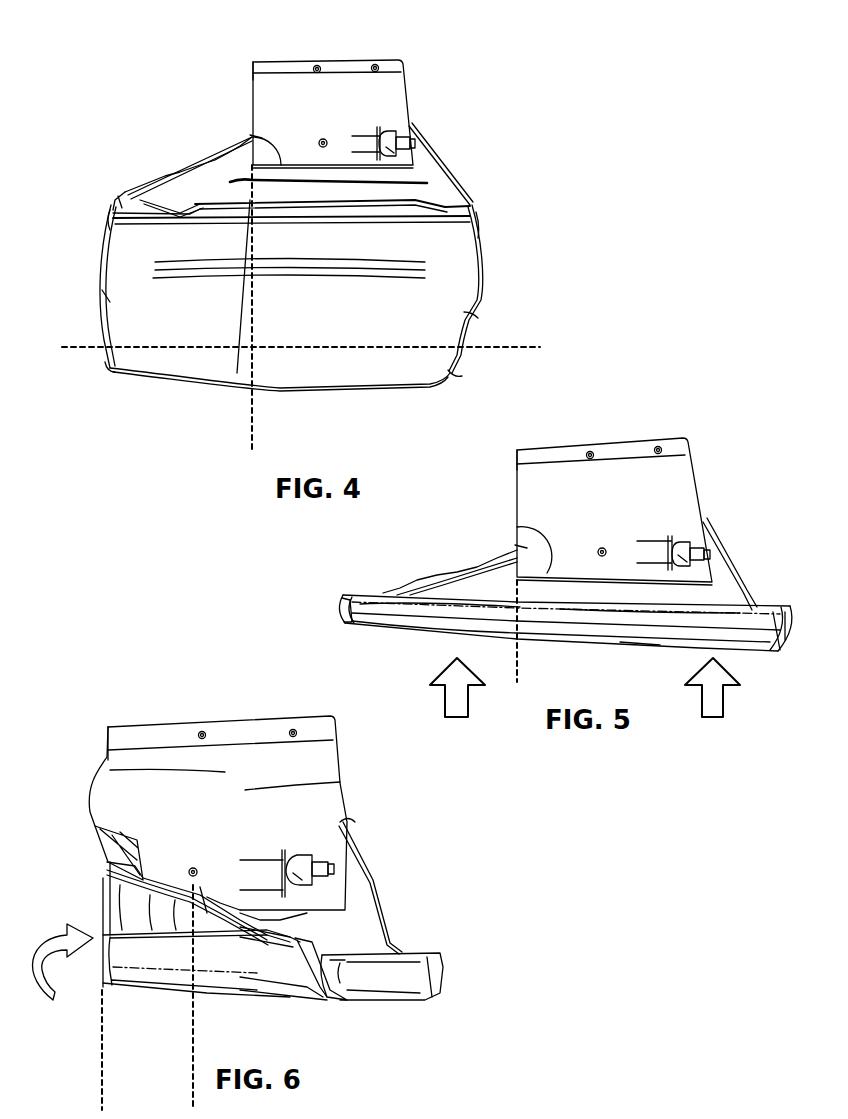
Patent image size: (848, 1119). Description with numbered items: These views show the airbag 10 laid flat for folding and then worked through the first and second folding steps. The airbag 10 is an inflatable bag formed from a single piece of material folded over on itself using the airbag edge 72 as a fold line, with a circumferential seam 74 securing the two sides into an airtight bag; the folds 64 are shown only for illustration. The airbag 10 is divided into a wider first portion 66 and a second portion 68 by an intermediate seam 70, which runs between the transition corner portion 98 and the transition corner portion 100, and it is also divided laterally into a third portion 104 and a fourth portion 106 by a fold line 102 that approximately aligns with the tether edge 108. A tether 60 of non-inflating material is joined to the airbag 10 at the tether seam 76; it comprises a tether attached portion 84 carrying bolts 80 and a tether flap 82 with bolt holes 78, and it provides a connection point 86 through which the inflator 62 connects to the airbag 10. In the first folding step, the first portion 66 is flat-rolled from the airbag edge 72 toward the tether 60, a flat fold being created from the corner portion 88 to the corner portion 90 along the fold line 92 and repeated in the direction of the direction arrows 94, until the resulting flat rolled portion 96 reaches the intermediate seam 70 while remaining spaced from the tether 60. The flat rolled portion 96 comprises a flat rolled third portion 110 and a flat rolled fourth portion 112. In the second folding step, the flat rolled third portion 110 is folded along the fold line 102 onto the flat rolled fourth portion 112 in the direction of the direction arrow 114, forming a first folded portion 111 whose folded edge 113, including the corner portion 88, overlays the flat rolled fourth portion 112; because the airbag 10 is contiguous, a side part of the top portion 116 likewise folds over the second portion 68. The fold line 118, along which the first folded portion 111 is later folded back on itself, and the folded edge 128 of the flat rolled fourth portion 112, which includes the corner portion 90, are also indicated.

In FIG. 4, the airbag 10 is at (226, 153).
In FIG. 5, the airbag 10 is at (478, 562).
In FIG. 6, the airbag 10 is at (388, 882).
In FIG. 4, the tether 60 is at (410, 72).
In FIG. 5, the tether 60 is at (697, 458).
In FIG. 6, the tether 60 is at (340, 750).
In FIG. 4, the inflator 62 is at (415, 150).
In FIG. 5, the inflator 62 is at (712, 557).
In FIG. 6, the inflator 62 is at (340, 870).
In FIG. 4, the folds 64 is at (150, 186).
In FIG. 4, the first portion 66 is at (330, 378).
In FIG. 4, the second portion 68 is at (195, 190).
In FIG. 4, the intermediate seam 70 is at (115, 214).
In FIG. 4, the airbag edge 72 is at (392, 388).
In FIG. 4, the circumferential seam 74 is at (104, 270).
In FIG. 4, the tether seam 76 is at (260, 133).
In FIG. 5, the tether seam 76 is at (530, 533).
In FIG. 6, the tether seam 76 is at (307, 913).
In FIG. 4, the bolt holes 78 is at (319, 66).
In FIG. 5, the bolt holes 78 is at (592, 452).
In FIG. 6, the bolt holes 78 is at (204, 731).
In FIG. 4, the bolts 80 is at (324, 139).
In FIG. 5, the bolts 80 is at (603, 548).
In FIG. 6, the bolts 80 is at (194, 868).
In FIG. 4, the tether flap 82 is at (400, 100).
In FIG. 5, the tether flap 82 is at (690, 485).
In FIG. 6, the tether flap 82 is at (330, 775).
In FIG. 4, the tether attached portion 84 is at (250, 137).
In FIG. 5, the tether attached portion 84 is at (516, 536).
In FIG. 6, the tether attached portion 84 is at (97, 826).
In FIG. 4, the connection point 86 is at (338, 193).
In FIG. 4, the corner portion 88 is at (110, 368).
In FIG. 4, the corner portion 90 is at (462, 375).
In FIG. 4, the fold line 92 is at (75, 346).
In FIG. 5, the direction arrows 94 is at (455, 712).
In FIG. 5, the flat rolled portion 96 is at (767, 620).
In FIG. 4, the transition corner portion 98 is at (112, 203).
In FIG. 4, the transition corner portion 100 is at (482, 215).
In FIG. 4, the fold line 102 is at (250, 436).
In FIG. 5, the fold line 102 is at (520, 660).
In FIG. 6, the fold line 102 is at (100, 1095).
In FIG. 4, the third portion 104 is at (108, 300).
In FIG. 4, the fourth portion 106 is at (467, 312).
In FIG. 4, the tether edge 108 is at (252, 78).
In FIG. 5, the tether edge 108 is at (515, 473).
In FIG. 6, the tether edge 108 is at (106, 758).
In FIG. 5, the flat rolled third portion 110 is at (405, 626).
In FIG. 6, the first folded portion 111 is at (165, 986).
In FIG. 5, the flat rolled fourth portion 112 is at (632, 646).
In FIG. 6, the flat rolled fourth portion 112 is at (390, 1003).
In FIG. 5, the folded edge 113 is at (342, 600).
In FIG. 6, the folded edge 113 is at (340, 1000).
In FIG. 6, the direction arrow 114 is at (55, 945).
In FIG. 5, the top portion 116 is at (410, 586).
In FIG. 6, the top portion 116 is at (107, 896).
In FIG. 6, the fold line 118 is at (190, 1095).
In FIG. 5, the folded edge 128 is at (785, 650).
In FIG. 6, the folded edge 128 is at (440, 975).